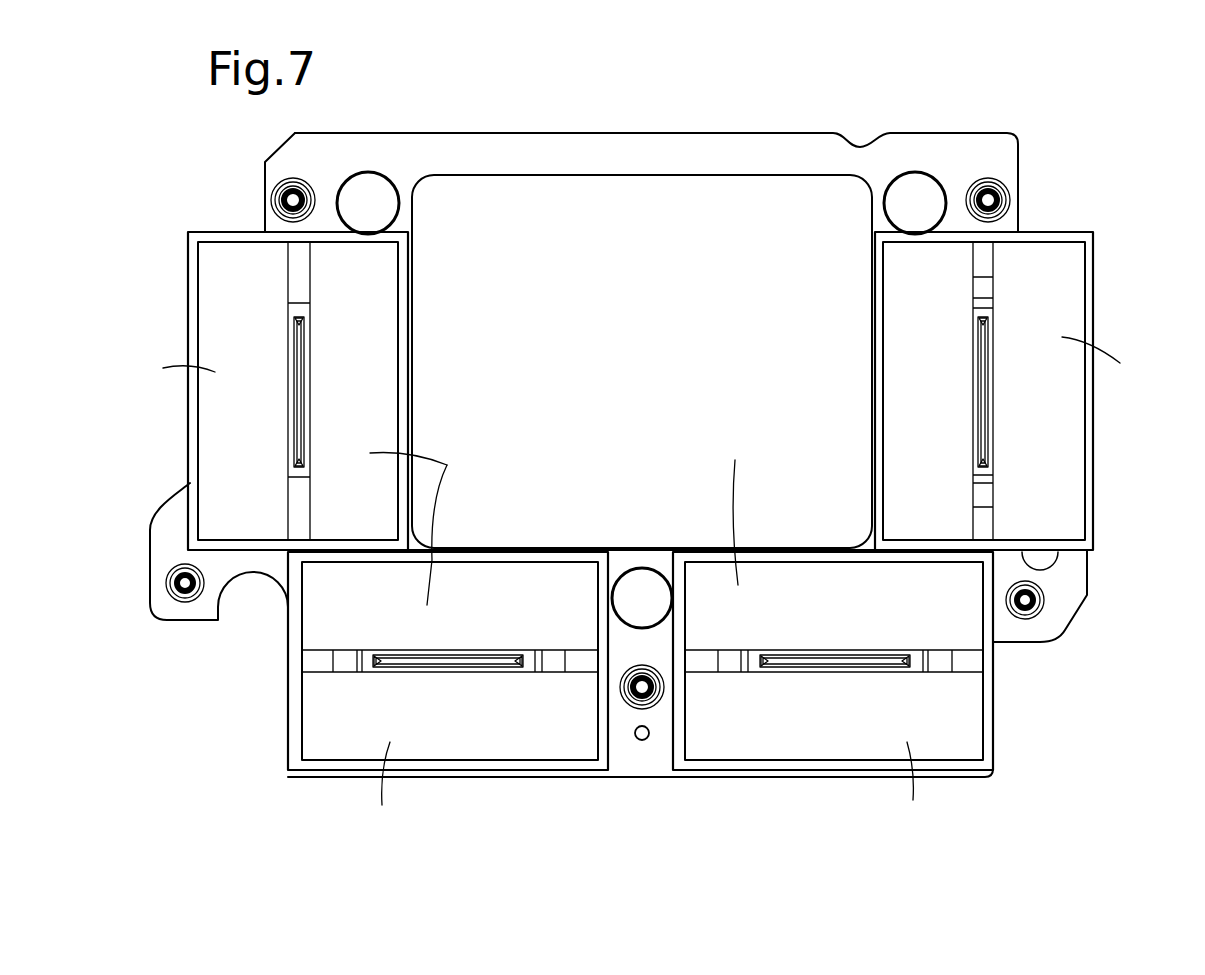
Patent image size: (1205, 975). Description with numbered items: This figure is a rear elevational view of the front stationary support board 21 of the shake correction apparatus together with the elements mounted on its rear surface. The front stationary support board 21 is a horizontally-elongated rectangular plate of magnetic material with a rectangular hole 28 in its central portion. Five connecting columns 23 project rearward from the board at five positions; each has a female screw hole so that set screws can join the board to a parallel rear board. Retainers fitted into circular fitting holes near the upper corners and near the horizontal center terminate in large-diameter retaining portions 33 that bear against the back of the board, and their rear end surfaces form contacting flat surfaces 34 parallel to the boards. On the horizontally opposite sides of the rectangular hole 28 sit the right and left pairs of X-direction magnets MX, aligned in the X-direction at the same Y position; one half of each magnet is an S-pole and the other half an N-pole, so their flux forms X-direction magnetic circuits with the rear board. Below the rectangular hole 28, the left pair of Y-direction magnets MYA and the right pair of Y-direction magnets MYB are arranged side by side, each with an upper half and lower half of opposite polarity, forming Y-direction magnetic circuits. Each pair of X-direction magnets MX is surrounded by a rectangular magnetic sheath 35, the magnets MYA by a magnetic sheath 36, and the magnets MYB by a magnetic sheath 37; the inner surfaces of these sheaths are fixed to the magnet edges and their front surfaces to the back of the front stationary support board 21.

The front stationary support board 21 is at (822, 147).
The connecting column 23 is at (280, 190).
The rectangular hole 28 is at (690, 177).
The retaining portion 33 is at (678, 349).
The contacting flat surface 34 is at (375, 198).
The magnetic sheath 35 is at (642, 391).
The magnetic sheath 36 is at (448, 658).
The magnetic sheath 37 is at (833, 636).
The X-direction magnet MX is at (385, 312).
The Y-direction magnet MYA is at (503, 742).
The Y-direction magnet MYB is at (807, 742).